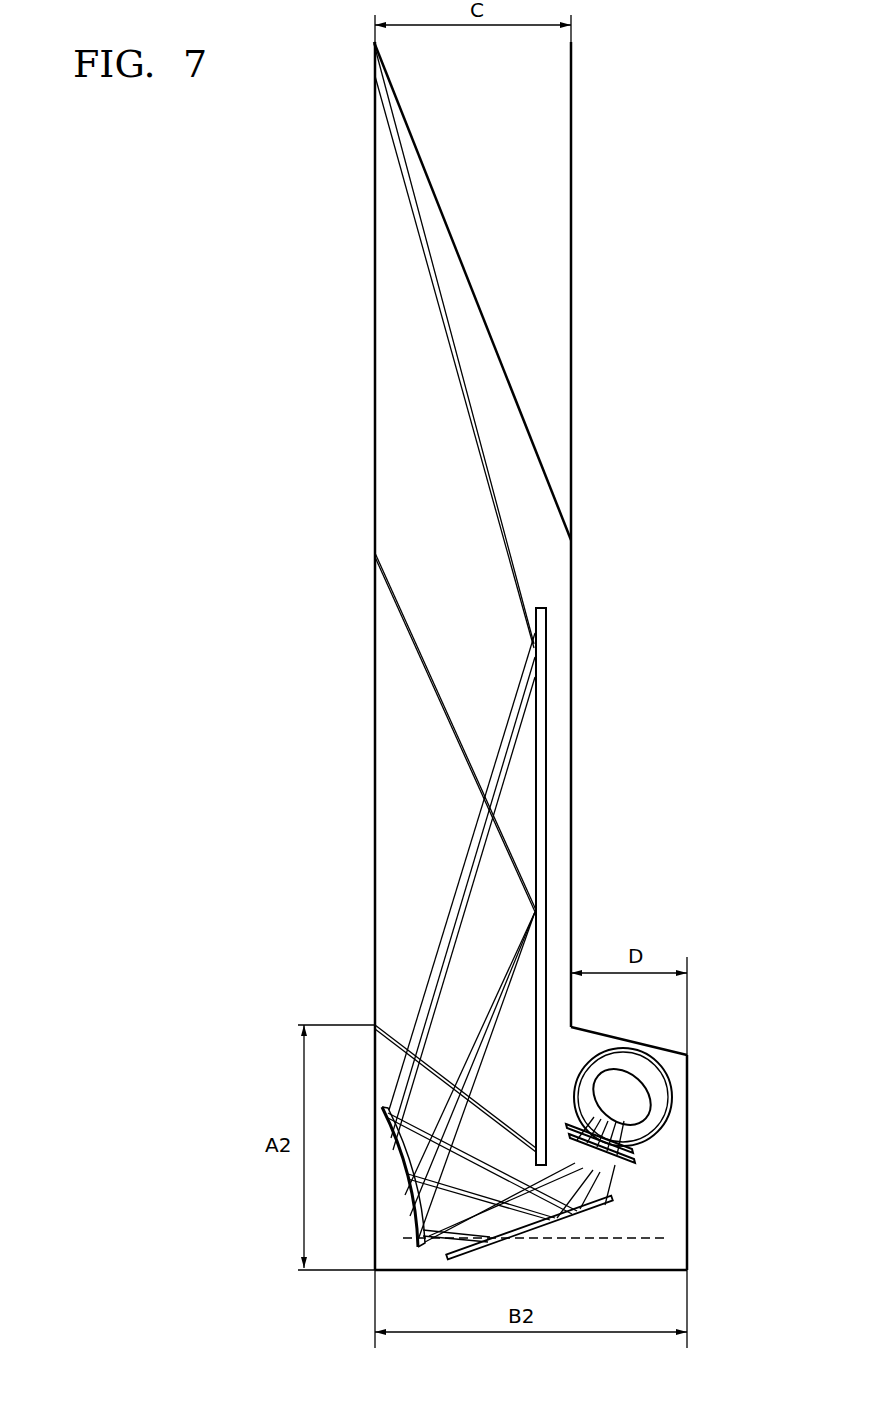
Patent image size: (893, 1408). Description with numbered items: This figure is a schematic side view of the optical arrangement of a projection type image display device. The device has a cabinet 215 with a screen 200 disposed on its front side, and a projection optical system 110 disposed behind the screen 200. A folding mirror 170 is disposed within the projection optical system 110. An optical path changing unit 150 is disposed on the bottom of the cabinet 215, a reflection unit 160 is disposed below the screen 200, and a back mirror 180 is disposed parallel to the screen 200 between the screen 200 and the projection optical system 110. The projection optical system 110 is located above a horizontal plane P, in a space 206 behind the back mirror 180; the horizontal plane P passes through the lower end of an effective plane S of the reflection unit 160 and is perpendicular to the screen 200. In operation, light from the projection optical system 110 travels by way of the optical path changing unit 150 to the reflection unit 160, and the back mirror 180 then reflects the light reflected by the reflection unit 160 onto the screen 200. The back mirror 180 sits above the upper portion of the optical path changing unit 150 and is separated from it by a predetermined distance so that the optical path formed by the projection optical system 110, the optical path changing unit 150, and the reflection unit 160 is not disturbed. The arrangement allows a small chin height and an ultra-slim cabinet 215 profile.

The projection optical system 110 is at (672, 1115).
The optical path changing unit 150 is at (577, 1213).
The reflection unit 160 is at (405, 1165).
The folding mirror 170 is at (643, 1083).
The back mirror 180 is at (540, 777).
The screen 200 is at (375, 690).
The space 206 is at (663, 1187).
The cabinet 215 is at (573, 618).
The effective plane S is at (417, 1222).
The horizontal plane P is at (637, 1240).